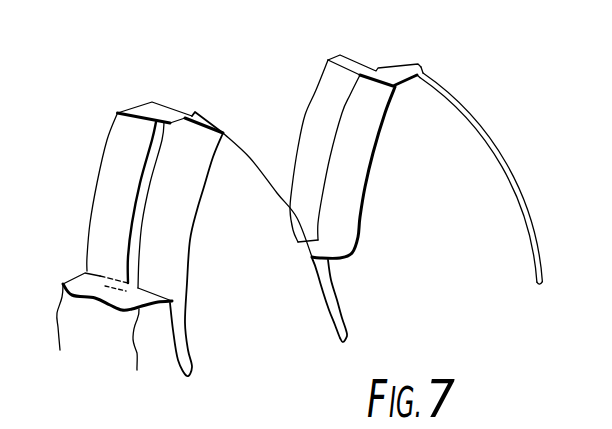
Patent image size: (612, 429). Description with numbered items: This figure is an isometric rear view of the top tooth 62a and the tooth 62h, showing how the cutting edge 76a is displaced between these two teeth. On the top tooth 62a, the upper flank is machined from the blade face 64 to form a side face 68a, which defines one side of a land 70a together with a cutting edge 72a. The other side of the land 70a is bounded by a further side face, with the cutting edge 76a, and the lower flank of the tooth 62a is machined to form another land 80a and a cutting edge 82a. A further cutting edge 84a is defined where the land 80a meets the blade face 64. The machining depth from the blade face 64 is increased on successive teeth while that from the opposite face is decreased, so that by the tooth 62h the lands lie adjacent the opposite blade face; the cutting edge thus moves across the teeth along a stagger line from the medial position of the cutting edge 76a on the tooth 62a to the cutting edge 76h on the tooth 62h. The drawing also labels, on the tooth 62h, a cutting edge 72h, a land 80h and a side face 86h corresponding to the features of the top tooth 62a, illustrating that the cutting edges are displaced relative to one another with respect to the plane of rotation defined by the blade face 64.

The tooth 62h is at (263, 298).
The top tooth 62a is at (455, 250).
The blade face 64 is at (405, 283).
The side face 68a is at (509, 168).
The land 70a is at (417, 73).
The cutting edge 72a is at (473, 114).
The lip 72h is at (193, 113).
The cutting edge 76a is at (397, 70).
The cutting edge 76h is at (152, 102).
The land 80a is at (337, 214).
The front face 80h is at (128, 238).
The cutting edge 82a is at (342, 114).
The cutting edge 84a is at (371, 152).
The side edge 86h is at (152, 158).